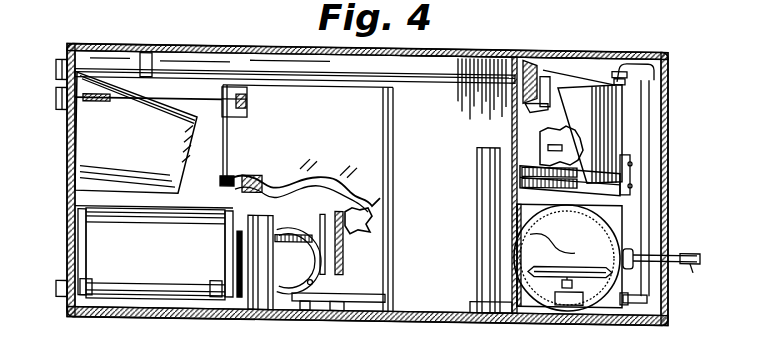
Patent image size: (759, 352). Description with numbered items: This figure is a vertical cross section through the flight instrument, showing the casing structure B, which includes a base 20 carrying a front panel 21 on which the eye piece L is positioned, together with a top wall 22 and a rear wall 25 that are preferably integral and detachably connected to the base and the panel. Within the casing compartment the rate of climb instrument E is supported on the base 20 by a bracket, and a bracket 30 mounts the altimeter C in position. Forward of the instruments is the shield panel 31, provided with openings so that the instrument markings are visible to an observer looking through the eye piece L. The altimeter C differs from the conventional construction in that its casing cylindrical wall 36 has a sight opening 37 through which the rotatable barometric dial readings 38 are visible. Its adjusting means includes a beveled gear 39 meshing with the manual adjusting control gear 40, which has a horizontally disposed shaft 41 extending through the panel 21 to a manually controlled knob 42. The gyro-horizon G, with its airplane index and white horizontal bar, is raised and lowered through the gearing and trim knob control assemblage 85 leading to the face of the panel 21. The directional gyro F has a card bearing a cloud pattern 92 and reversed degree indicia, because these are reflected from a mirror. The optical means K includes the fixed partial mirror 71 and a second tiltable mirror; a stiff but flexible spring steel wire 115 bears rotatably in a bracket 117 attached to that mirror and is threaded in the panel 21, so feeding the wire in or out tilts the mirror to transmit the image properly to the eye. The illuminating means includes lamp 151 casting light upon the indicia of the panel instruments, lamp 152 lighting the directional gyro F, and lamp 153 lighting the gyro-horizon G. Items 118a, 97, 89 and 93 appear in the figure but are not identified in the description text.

The base 20 is at (194, 313).
The panel 21 is at (67, 213).
The top wall 22 is at (272, 46).
The rear wall 25 is at (670, 173).
The casing structure B is at (493, 50).
The shaft 41 is at (290, 74).
The optical means K is at (375, 122).
The bracket 117 is at (250, 117).
The adjusting shaft 118a is at (58, 98).
The knob 42 is at (56, 70).
The eye piece L is at (95, 135).
The spring steel wire 115 is at (128, 100).
The gyro-horizon G is at (117, 240).
The gearing and trim knob control assemblage 85 is at (130, 288).
The bracket 97 is at (200, 193).
The stop 89 is at (228, 192).
The partial mirror 71 is at (288, 190).
The directional gyro F is at (350, 212).
The toothed segment 93 is at (378, 242).
The cloud pattern 92 is at (310, 283).
The lamp 153 is at (262, 308).
The lamp 152 is at (342, 308).
The shield panel 31 is at (512, 124).
The sight opening 37 is at (478, 157).
The lamp 151 is at (490, 178).
The manual adjusting control gear 40 is at (535, 62).
The beveled gear 39 is at (542, 68).
The altimeter C is at (623, 117).
The casing cylindrical wall 36 is at (558, 145).
The barometric dial readings 38 is at (617, 193).
The bracket 30 is at (627, 175).
The rate of climb instrument E is at (627, 230).